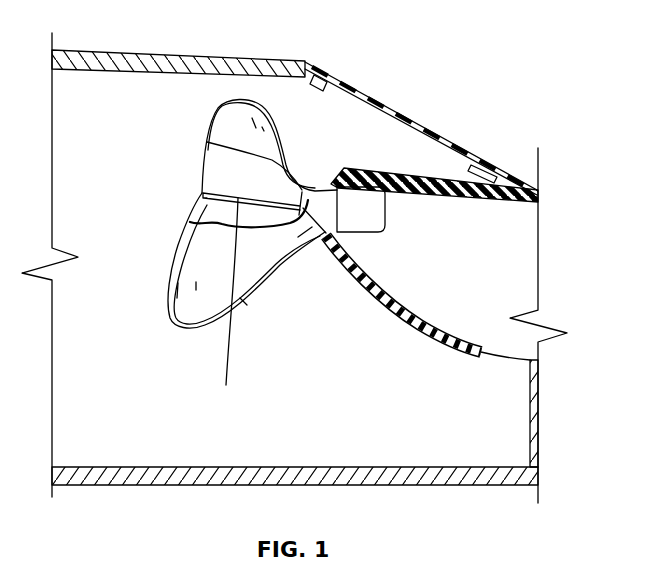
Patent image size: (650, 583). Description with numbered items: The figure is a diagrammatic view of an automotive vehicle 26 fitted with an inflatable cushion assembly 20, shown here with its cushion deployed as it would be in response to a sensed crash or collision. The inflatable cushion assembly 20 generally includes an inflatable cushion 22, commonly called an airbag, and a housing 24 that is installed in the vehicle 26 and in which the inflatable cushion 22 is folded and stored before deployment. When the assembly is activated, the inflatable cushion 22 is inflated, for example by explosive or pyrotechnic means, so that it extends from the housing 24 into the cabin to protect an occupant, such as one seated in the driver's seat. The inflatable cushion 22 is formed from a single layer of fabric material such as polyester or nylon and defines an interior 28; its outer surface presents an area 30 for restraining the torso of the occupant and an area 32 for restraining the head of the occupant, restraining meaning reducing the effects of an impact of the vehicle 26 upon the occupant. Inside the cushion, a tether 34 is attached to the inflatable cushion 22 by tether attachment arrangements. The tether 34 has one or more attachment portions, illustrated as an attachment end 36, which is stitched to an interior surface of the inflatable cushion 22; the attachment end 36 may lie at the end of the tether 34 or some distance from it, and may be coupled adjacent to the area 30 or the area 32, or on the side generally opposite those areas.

The inflatable cushion assembly 20 is at (194, 96).
The inflatable cushion 22 is at (262, 275).
The housing 24 is at (378, 222).
The automotive vehicle 26 is at (213, 56).
The interior 28 is at (273, 183).
The area for restraining a torso 30 is at (175, 255).
The area for restraining a head 32 is at (205, 133).
The tether 34 is at (230, 303).
The attachment end 36 is at (203, 195).